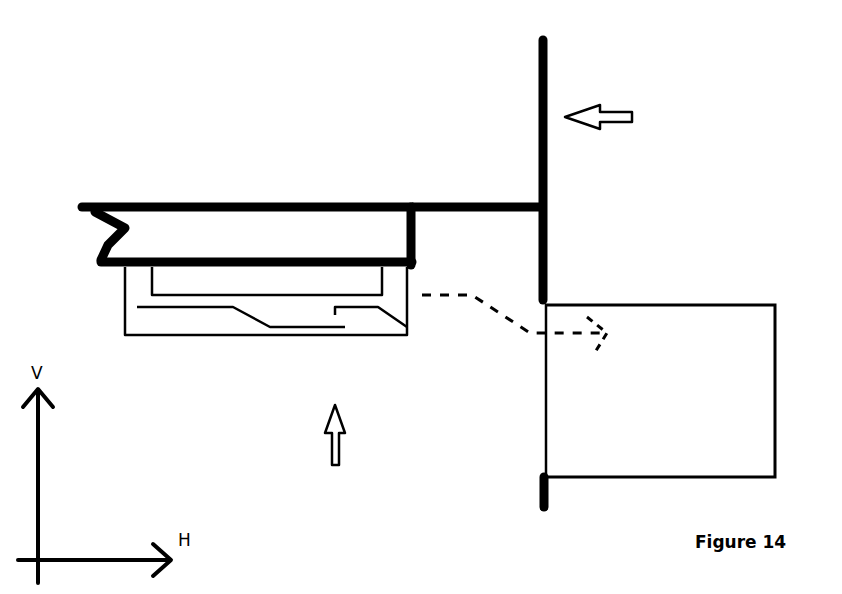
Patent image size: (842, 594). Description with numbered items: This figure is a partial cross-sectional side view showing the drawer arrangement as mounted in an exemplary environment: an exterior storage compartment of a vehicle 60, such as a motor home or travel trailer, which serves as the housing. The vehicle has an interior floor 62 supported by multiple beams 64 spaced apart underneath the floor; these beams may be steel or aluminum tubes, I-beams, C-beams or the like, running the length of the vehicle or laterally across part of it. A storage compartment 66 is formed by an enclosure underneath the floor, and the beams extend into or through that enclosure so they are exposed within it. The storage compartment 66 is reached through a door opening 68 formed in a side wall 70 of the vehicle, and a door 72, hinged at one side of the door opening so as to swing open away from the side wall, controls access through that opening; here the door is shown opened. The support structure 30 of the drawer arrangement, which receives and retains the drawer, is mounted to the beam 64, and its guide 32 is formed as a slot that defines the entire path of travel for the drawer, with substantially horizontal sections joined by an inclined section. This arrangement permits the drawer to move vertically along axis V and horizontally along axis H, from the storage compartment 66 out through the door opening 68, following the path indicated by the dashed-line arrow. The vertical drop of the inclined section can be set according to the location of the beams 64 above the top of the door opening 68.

The support structure 30 is at (203, 323).
The guide 32 is at (151, 308).
The vehicle 60 is at (615, 118).
The interior floor 62 is at (430, 203).
The beam 64 is at (248, 235).
The storage compartment 66 is at (349, 439).
The door opening 68 is at (543, 398).
The side wall 70 is at (547, 267).
The door 72 is at (703, 348).